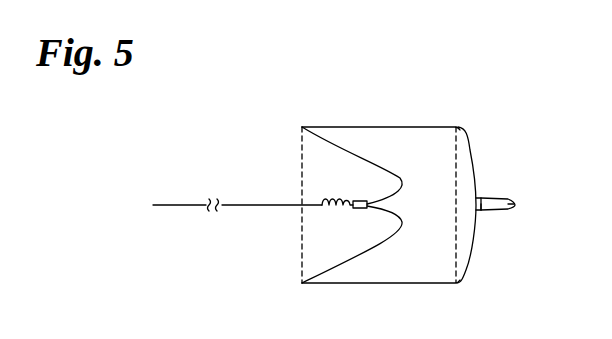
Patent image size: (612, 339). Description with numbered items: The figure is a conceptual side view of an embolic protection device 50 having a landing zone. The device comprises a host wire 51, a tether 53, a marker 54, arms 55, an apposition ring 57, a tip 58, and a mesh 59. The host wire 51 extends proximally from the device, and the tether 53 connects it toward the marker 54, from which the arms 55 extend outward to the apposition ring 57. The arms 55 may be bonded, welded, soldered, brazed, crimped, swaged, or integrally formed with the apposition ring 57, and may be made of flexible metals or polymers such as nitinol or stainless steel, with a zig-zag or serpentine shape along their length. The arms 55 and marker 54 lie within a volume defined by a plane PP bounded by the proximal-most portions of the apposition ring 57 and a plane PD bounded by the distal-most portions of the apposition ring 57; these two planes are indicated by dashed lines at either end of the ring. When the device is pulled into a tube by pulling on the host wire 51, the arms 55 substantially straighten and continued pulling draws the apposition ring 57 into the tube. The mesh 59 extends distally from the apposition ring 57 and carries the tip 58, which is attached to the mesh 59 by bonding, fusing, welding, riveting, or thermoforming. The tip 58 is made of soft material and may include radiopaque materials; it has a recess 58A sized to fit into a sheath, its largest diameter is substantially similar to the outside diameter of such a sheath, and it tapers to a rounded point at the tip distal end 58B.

The embolic protection device 50 is at (237, 123).
The host wire 51 is at (183, 207).
The tether 53 is at (324, 206).
The marker 54 is at (360, 200).
The arms 55 is at (332, 147).
The apposition ring 57 is at (393, 126).
The mesh 59 is at (471, 150).
The tip 58 is at (497, 200).
The recess 58A is at (480, 211).
The tip distal end 58B is at (515, 205).
The plane PP is at (301, 258).
The plane PD is at (456, 257).